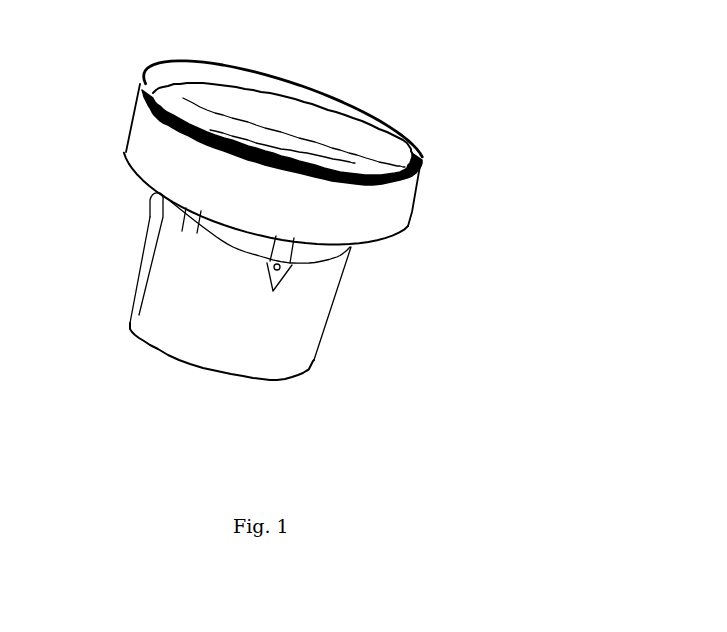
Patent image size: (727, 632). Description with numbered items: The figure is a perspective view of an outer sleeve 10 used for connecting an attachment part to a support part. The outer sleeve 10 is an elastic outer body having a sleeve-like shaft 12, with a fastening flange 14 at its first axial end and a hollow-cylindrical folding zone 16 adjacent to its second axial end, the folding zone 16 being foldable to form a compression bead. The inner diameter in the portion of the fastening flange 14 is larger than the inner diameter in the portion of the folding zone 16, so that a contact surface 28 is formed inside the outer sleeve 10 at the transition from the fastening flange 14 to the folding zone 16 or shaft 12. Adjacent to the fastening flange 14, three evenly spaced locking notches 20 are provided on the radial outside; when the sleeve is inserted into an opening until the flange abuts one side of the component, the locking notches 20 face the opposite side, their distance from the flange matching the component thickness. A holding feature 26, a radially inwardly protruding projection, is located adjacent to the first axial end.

The outer sleeve 10 is at (636, 71).
The sleeve-like shaft 12 is at (187, 268).
The fastening flange 14 is at (403, 207).
The hollow-cylindrical folding zone 16 is at (285, 348).
The locking notches 20 is at (152, 203).
The holding feature 26 is at (178, 92).
The contact surface 28 is at (342, 159).